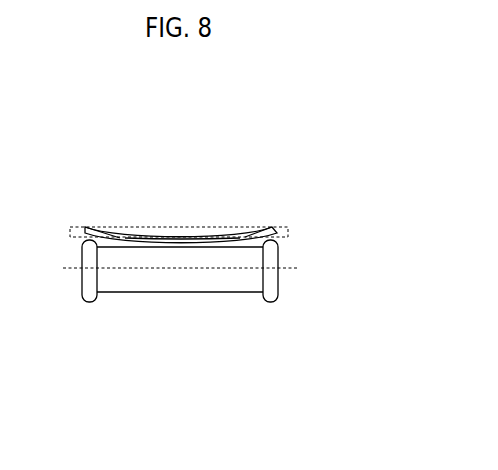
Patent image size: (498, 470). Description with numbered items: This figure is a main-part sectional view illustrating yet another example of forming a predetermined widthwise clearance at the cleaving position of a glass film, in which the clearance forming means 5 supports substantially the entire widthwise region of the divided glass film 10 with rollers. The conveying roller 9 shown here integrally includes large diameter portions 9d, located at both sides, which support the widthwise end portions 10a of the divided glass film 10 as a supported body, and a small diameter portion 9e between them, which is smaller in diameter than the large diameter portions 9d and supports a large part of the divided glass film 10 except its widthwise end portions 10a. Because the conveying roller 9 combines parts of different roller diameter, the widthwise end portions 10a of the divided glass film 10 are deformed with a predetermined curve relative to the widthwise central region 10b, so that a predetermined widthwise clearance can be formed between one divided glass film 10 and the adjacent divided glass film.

The clearance forming means 5 is at (320, 152).
The conveying roller 9 is at (163, 317).
The large diameter portions 9d is at (93, 302).
The small diameter portion 9e is at (208, 283).
The divided glass film 10 is at (180, 232).
The widthwise end portions 10a is at (90, 223).
The widthwise central region 10b is at (153, 235).